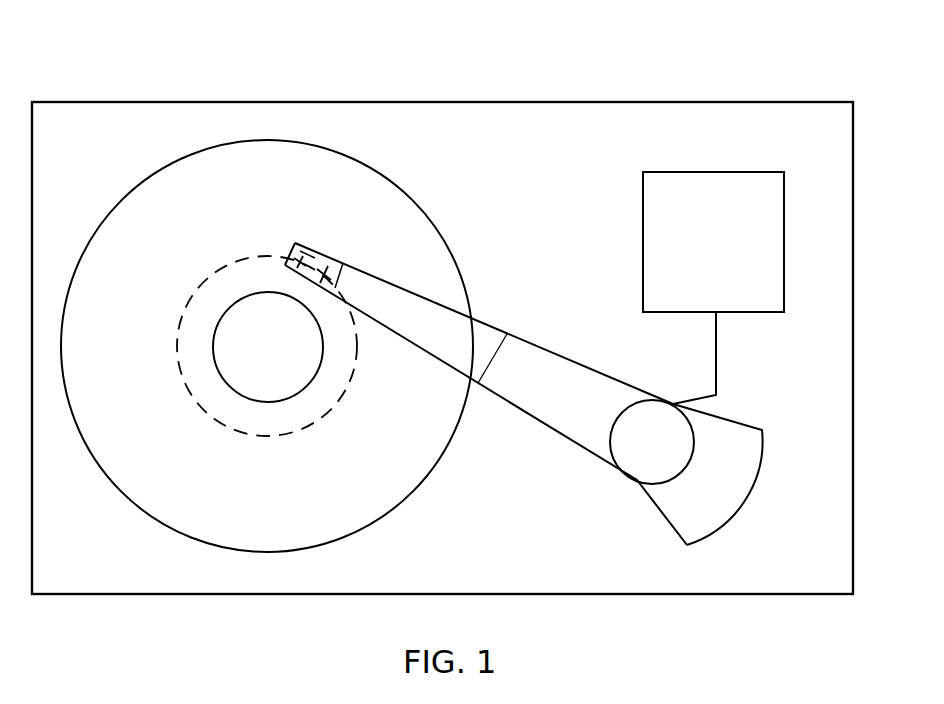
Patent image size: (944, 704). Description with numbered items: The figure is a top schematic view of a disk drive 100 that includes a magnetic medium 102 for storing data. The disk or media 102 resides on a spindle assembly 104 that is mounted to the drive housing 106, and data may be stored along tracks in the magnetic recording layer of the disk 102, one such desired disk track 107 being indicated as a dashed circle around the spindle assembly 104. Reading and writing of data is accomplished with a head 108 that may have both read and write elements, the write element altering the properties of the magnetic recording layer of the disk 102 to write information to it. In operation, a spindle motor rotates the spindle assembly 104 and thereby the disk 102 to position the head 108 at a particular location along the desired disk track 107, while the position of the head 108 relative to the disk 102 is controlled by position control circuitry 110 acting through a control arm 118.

The disk drive 100 is at (172, 63).
The magnetic medium 102 is at (414, 202).
The spindle assembly 104 is at (251, 352).
The drive housing 106 is at (533, 102).
The disk track 107 is at (225, 272).
The head 108 is at (318, 258).
The position control circuitry 110 is at (693, 255).
The control arm 118 is at (535, 343).